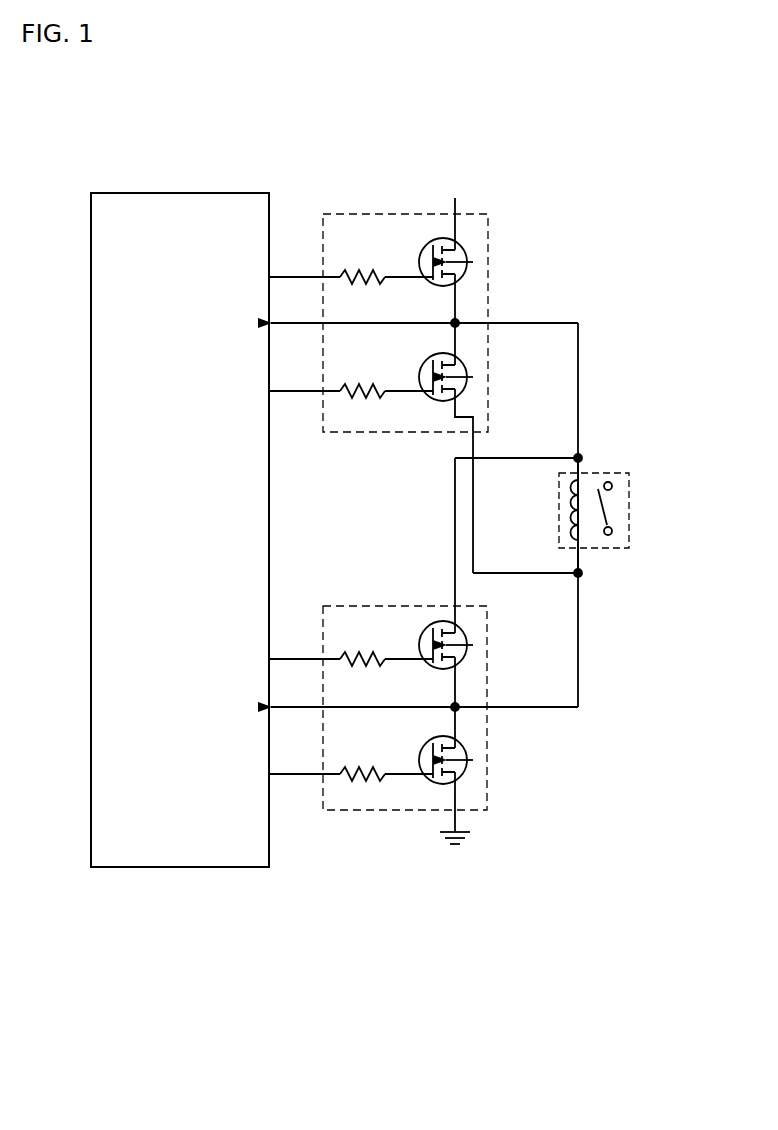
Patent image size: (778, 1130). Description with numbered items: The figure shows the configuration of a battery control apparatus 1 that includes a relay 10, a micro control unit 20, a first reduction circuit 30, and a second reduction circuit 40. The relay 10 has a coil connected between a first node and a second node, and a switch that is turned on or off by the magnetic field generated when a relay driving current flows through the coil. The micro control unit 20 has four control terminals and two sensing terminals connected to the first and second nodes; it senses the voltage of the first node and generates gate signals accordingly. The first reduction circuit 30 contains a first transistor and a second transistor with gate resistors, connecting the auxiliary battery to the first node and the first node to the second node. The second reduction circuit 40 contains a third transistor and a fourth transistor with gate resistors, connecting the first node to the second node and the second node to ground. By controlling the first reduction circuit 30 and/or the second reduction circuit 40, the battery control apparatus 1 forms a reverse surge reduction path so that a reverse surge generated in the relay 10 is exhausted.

The battery control apparatus 1 is at (342, 966).
The relay 10 is at (630, 488).
The micro control unit (MCU) 20 is at (180, 530).
The first reduction circuit 30 is at (412, 213).
The second reduction circuit 40 is at (489, 745).